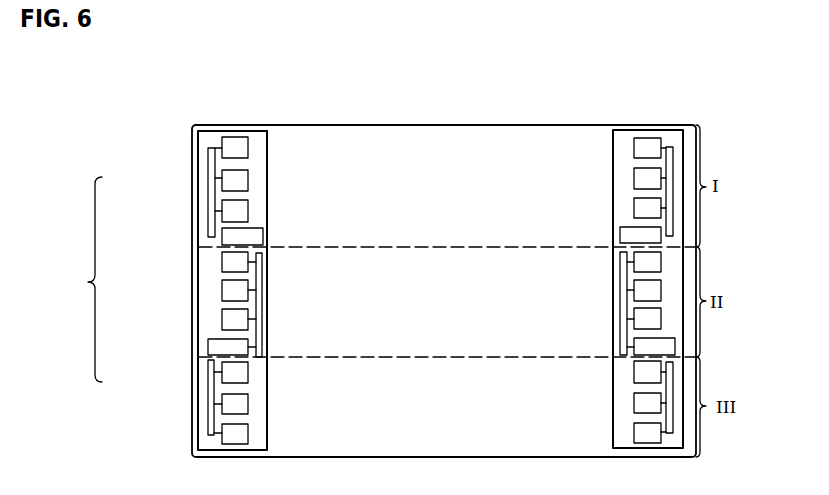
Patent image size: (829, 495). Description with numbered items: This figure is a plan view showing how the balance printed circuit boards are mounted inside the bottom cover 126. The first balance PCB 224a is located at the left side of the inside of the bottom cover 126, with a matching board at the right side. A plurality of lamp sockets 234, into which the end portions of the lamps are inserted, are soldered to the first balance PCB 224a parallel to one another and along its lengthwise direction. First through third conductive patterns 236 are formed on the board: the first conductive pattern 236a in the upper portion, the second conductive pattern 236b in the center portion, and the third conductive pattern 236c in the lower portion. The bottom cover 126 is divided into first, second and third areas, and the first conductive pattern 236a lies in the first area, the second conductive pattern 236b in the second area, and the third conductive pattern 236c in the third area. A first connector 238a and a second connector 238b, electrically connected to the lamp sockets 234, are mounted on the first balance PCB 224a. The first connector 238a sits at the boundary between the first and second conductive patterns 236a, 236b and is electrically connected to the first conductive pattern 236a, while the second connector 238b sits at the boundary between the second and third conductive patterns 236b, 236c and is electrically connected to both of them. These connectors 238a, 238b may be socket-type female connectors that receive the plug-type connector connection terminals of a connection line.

The bottom cover 126 is at (446, 138).
The first balance PCB 224a is at (221, 131).
The lamp socket 234 is at (245, 147).
The conductive patterns 236 is at (202, 263).
The first conductive pattern 236a is at (238, 163).
The second conductive pattern 236b is at (239, 304).
The third conductive pattern 236c is at (213, 382).
The first connector 238a is at (243, 233).
The second connector 238b is at (240, 346).